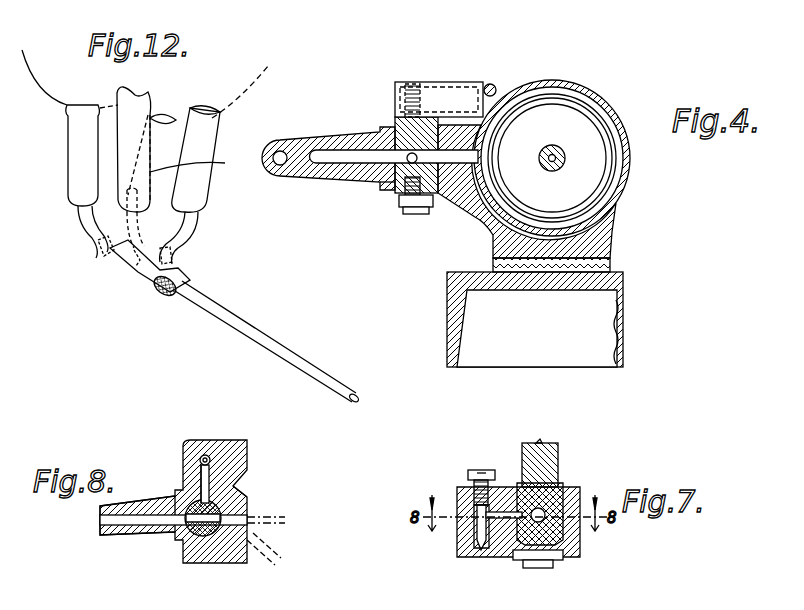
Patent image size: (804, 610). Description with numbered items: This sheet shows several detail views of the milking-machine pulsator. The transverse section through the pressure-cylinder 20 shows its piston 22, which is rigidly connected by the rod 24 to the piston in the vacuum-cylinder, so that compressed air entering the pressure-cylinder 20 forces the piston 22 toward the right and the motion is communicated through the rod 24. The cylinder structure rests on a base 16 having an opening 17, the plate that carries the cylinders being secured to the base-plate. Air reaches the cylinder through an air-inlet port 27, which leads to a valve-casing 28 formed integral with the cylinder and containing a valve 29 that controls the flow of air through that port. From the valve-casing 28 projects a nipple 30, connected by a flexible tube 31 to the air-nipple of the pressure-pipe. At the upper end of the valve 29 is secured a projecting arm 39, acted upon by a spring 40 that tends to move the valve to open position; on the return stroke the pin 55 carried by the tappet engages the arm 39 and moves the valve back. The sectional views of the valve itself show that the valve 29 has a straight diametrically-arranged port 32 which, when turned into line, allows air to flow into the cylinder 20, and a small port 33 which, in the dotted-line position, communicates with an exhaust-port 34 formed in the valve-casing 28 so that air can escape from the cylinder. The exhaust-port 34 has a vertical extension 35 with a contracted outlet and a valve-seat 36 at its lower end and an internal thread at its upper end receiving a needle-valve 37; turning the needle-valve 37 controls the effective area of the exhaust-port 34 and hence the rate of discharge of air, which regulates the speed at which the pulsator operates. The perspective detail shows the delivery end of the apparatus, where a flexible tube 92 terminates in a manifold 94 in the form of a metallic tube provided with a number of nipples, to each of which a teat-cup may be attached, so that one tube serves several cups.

In FIG. 4, the base plate 16 is at (623, 282).
In FIG. 4, the base opening 17 is at (528, 352).
In FIG. 4, the pressure-cylinder 20 is at (628, 182).
In FIG. 4, the piston 22 is at (552, 158).
In FIG. 4, the rod 24 is at (560, 150).
In FIG. 4, the air-inlet port 27 is at (480, 156).
In FIG. 8, the air-inlet port 27 is at (248, 512).
In FIG. 4, the valve-casing 28 is at (405, 188).
In FIG. 8, the valve-casing 28 is at (238, 490).
In FIG. 7, the valve-casing 28 is at (578, 485).
In FIG. 4, the valve 29 is at (398, 122).
In FIG. 8, the valve 29 is at (205, 536).
In FIG. 7, the valve 29 is at (528, 482).
In FIG. 4, the nipple 30 is at (337, 179).
In FIG. 8, the nipple 30 is at (124, 532).
In FIG. 4, the flexible tube 31 is at (282, 142).
In FIG. 4, the port 32 is at (383, 186).
In FIG. 8, the port 32 is at (205, 516).
In FIG. 7, the port 32 is at (552, 522).
In FIG. 8, the small port 33 is at (220, 492).
In FIG. 8, the exhaust-port 34 is at (202, 472).
In FIG. 7, the exhaust-port 34 is at (506, 522).
In FIG. 8, the vertical extension 35 is at (208, 460).
In FIG. 7, the vertical extension 35 is at (475, 535).
In FIG. 7, the valve-seat 36 is at (480, 555).
In FIG. 8, the needle-valve 37 is at (198, 456).
In FIG. 7, the needle-valve 37 is at (470, 487).
In FIG. 4, the projecting arm 39 is at (468, 82).
In FIG. 7, the projecting arm 39 is at (540, 443).
In FIG. 4, the spring 40 is at (430, 85).
In FIG. 4, the pin 55 is at (494, 85).
In FIG. 12, the flexible tube 92 is at (236, 315).
In FIG. 12, the manifold 94 is at (130, 262).